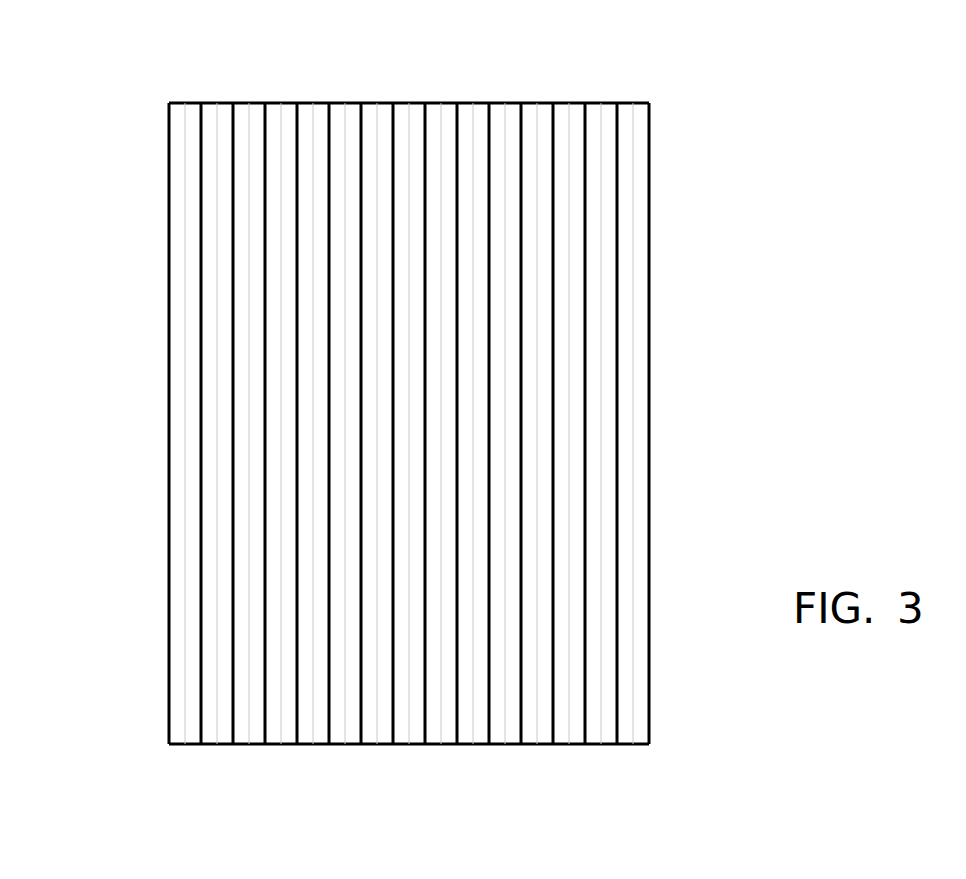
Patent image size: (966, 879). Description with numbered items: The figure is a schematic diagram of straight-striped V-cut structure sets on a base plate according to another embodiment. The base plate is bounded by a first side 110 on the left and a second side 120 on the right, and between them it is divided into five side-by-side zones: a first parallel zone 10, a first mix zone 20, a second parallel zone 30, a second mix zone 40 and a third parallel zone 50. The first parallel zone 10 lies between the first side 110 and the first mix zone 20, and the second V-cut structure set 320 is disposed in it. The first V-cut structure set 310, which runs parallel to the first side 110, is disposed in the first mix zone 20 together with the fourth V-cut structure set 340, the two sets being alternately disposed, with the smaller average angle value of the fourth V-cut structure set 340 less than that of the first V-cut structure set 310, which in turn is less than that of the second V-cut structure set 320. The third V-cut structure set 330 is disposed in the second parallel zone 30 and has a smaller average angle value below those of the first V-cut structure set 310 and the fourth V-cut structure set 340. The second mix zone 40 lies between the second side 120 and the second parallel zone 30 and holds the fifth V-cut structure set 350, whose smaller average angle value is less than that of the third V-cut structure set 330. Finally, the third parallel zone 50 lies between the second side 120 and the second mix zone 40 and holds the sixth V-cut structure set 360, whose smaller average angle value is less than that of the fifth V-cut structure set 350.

The first parallel zone 10 is at (169, 97).
The first mix zone 20 is at (265, 97).
The second parallel zone 30 is at (361, 97).
The second mix zone 40 is at (457, 97).
The third parallel zone 50 is at (553, 97).
The first side 110 is at (168, 468).
The second side 120 is at (649, 468).
The first V-cut structure set 310 is at (288, 735).
The second V-cut structure set 320 is at (169, 754).
The third V-cut structure set 330 is at (361, 754).
The fourth V-cut structure set 340 is at (320, 735).
The fifth V-cut structure set 350 is at (457, 754).
The sixth V-cut structure set 360 is at (553, 754).